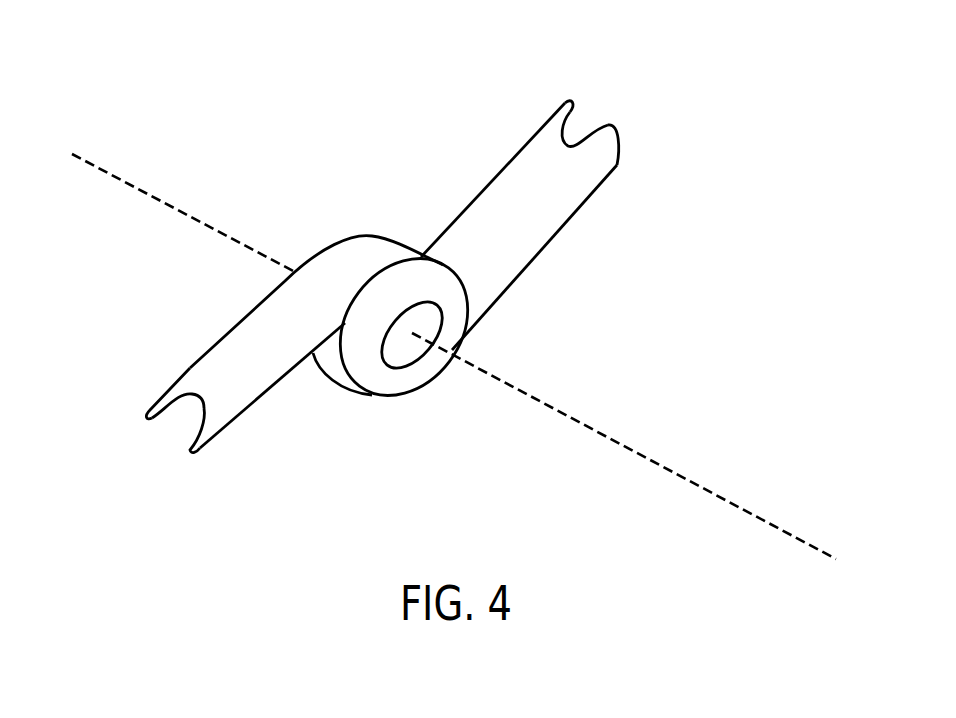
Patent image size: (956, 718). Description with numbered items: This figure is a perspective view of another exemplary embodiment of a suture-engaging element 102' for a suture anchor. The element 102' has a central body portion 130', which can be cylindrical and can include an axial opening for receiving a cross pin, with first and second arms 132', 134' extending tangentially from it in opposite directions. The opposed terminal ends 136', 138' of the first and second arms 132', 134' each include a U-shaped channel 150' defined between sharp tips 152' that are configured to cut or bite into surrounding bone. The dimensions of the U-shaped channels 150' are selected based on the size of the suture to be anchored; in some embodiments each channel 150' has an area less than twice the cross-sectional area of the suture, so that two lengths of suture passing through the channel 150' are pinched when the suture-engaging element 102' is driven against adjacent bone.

The suture-engaging element 102' is at (403, 272).
The central body portion 130' is at (403, 338).
The first arm 132' is at (316, 342).
The second arm 134' is at (519, 226).
The terminal end 136' is at (151, 372).
The terminal end 138' is at (544, 72).
The U-shaped channel 150' is at (384, 270).
The sharp tip 152' is at (441, 318).